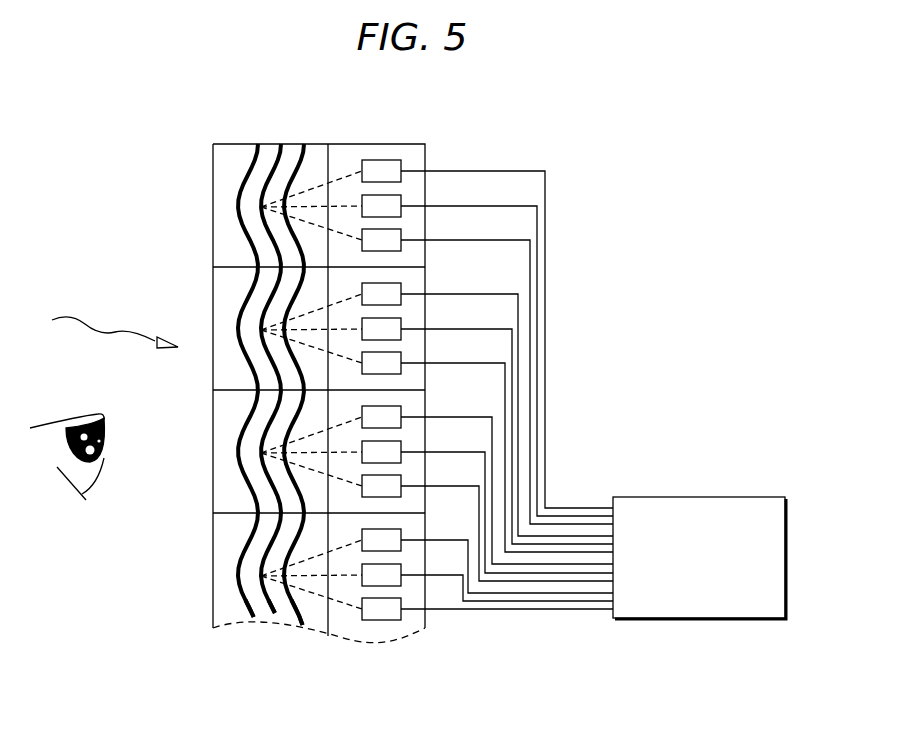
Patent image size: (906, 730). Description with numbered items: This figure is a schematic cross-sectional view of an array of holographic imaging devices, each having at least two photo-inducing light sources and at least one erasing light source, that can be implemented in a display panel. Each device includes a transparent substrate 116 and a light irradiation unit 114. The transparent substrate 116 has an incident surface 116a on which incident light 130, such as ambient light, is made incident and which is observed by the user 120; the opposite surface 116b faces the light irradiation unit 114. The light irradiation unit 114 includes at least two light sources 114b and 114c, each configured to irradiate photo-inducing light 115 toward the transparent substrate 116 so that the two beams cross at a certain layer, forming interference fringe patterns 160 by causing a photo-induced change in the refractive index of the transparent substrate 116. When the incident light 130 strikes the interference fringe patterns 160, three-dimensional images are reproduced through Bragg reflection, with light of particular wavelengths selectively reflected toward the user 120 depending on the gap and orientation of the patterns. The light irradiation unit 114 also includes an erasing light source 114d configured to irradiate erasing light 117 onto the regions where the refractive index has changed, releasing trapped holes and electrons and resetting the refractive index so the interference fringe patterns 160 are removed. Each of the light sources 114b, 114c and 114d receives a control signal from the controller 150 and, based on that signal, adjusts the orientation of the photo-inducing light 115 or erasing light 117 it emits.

The light irradiation unit 114 is at (425, 137).
The light source 114b is at (390, 170).
The light source 114c is at (390, 244).
The erasing light source 114d is at (392, 207).
The photo-inducing light 115 is at (255, 197).
The transparent substrate 116 is at (327, 137).
The incident surface 116a is at (213, 231).
The second surface of lens array 116b is at (335, 614).
The erasing light 117 is at (338, 207).
The user 120 is at (77, 512).
The incident light 130 is at (108, 330).
The controller 150 is at (749, 497).
The interference fringe patterns 160 is at (300, 622).